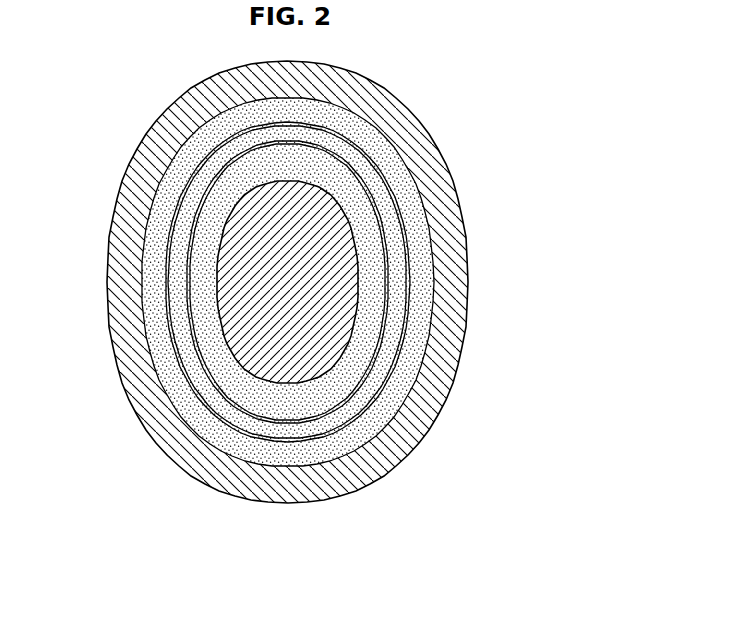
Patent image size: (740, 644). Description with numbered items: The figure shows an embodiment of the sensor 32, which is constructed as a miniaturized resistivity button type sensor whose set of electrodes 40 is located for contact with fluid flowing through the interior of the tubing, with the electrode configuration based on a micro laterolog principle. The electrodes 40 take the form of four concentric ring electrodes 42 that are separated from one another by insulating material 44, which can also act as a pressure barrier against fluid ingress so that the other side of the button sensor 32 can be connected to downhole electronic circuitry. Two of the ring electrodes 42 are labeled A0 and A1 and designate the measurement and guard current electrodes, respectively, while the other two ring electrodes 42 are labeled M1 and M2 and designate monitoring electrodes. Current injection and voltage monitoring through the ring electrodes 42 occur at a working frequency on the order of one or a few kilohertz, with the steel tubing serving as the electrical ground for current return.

The sensor 32 is at (124, 122).
The guard current electrode A1 is at (121, 181).
The monitoring electrode M2 is at (165, 248).
The monitoring electrode M1 is at (186, 302).
The measurement electrode A0 is at (301, 295).
The electrodes 40 is at (334, 188).
The ring electrodes 42 is at (358, 315).
The insulating material 44 is at (375, 240).